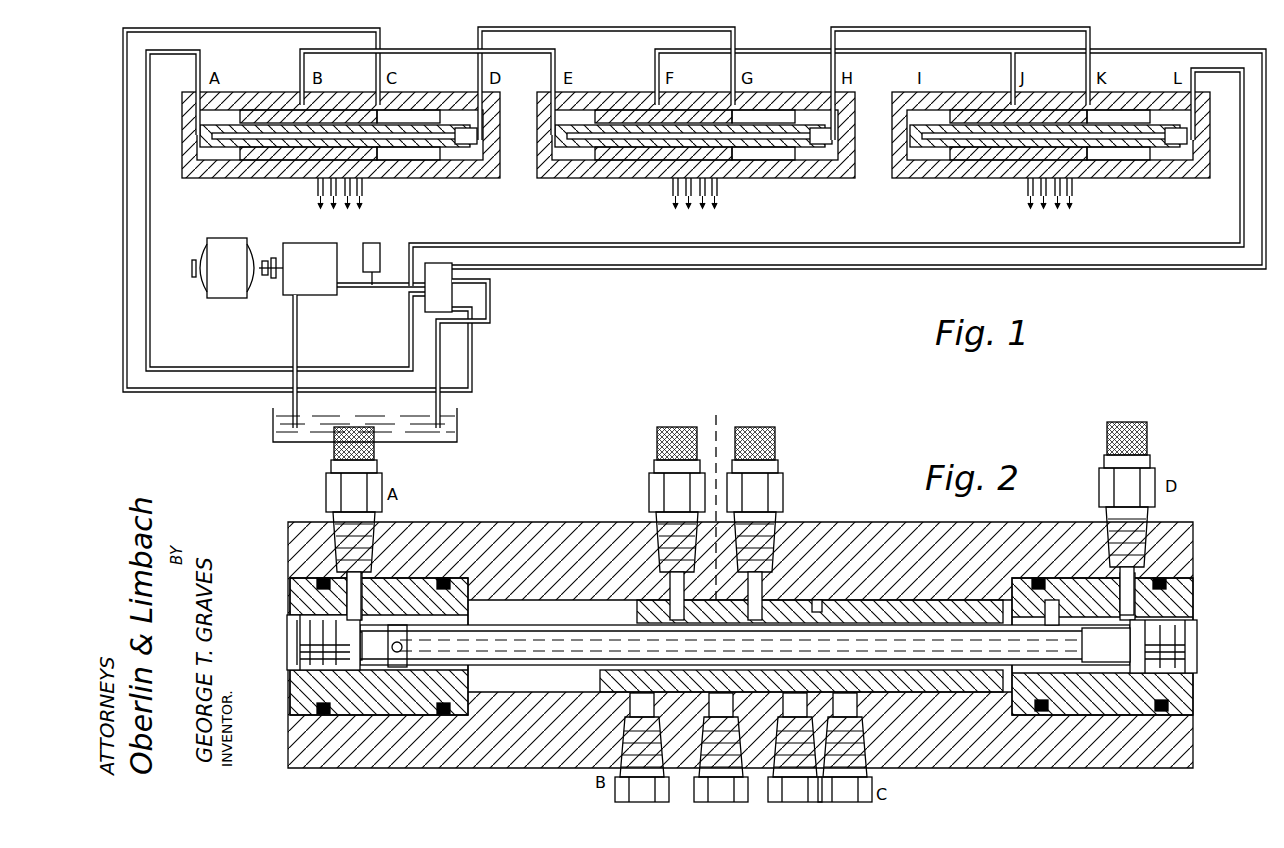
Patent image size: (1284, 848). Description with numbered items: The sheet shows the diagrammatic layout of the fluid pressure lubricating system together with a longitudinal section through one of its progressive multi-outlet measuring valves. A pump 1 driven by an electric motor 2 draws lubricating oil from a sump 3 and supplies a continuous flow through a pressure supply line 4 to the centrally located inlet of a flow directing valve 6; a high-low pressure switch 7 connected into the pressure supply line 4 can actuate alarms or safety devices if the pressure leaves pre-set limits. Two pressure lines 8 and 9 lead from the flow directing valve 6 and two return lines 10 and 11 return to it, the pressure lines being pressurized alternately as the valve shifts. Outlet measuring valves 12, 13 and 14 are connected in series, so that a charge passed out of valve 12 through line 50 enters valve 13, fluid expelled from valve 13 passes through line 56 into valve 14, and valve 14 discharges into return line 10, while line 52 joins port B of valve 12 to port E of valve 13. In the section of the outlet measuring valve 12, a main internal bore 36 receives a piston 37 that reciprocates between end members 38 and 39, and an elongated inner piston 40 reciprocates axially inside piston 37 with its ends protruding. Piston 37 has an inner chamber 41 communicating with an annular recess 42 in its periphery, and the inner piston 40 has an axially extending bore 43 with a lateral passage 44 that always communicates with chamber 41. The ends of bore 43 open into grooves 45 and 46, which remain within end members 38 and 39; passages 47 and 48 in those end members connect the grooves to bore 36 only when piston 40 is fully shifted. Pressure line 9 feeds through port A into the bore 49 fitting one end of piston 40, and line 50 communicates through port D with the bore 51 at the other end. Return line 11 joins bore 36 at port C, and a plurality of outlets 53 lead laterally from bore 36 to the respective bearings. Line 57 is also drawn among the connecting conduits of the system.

In FIG. 1, the pump 1 is at (304, 243).
In FIG. 1, the electric motor 2 is at (226, 238).
In FIG. 1, the sump 3 is at (455, 433).
In FIG. 1, the pressure supply line 4 is at (385, 288).
In FIG. 1, the flow directing valve 6 is at (438, 287).
In FIG. 1, the high-low pressure switch 7 is at (371, 264).
In FIG. 1, the pressure line 8 is at (788, 243).
In FIG. 1, the pressure line 9 is at (150, 318).
In FIG. 2, the pressure line 9 is at (333, 455).
In FIG. 1, the return line 10 is at (808, 270).
In FIG. 1, the return line 11 is at (124, 368).
In FIG. 2, the return line 11 is at (845, 749).
In FIG. 1, the outlet measuring valve 12 is at (200, 179).
In FIG. 2, the outlet measuring valve 12 is at (500, 522).
In FIG. 1, the outlet measuring valve 13 is at (557, 179).
In FIG. 1, the outlet measuring valve 14 is at (906, 179).
In FIG. 2, the main internal bore 36 is at (566, 600).
In FIG. 2, the piston 37 is at (600, 660).
In FIG. 2, the end member 38 is at (392, 700).
In FIG. 2, the end member 39 is at (1100, 700).
In FIG. 2, the elongated inner piston 40 is at (535, 668).
In FIG. 2, the inner chamber 41 is at (905, 692).
In FIG. 2, the annular recess 42 is at (817, 600).
In FIG. 2, the axially extending bore 43 is at (505, 655).
In FIG. 2, the lateral passage 44 is at (711, 504).
In FIG. 2, the groove 45 is at (398, 625).
In FIG. 2, the groove 46 is at (1050, 600).
In FIG. 2, the passage 47 is at (432, 692).
In FIG. 2, the passage 48 is at (1068, 692).
In FIG. 2, the bore 49 is at (342, 690).
In FIG. 1, the line 50 is at (588, 31).
In FIG. 2, the line 50 is at (1145, 440).
In FIG. 2, the bore 51 is at (1120, 665).
In FIG. 1, the line 52 is at (412, 52).
In FIG. 2, the line 52 is at (618, 790).
In FIG. 1, the outlets 53 is at (316, 188).
In FIG. 2, the outlets 53 is at (656, 443).
In FIG. 1, the line 56 is at (760, 52).
In FIG. 1, the conduit 57 is at (942, 31).